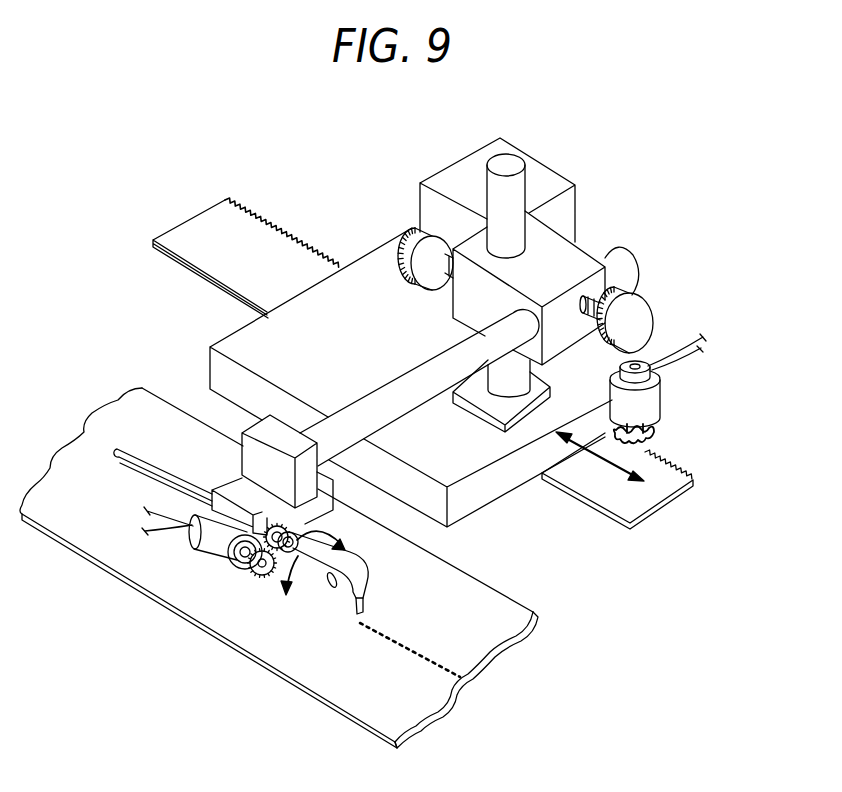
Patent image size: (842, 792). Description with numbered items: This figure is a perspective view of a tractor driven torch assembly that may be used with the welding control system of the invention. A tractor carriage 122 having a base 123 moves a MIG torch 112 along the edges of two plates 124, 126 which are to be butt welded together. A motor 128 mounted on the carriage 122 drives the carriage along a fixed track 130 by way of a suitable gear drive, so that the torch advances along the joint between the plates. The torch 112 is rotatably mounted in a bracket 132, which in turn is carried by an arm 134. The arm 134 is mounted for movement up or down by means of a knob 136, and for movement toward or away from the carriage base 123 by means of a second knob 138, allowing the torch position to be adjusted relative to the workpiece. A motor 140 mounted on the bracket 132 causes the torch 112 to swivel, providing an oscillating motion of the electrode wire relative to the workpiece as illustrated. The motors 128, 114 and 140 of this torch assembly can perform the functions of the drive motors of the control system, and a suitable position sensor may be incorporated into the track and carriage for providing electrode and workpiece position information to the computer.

The torch 112 is at (357, 577).
The motor 114 is at (317, 573).
The tractor carriage 122 is at (587, 238).
The carriage base 123 is at (470, 451).
The plate 124 is at (473, 626).
The plate 126 is at (385, 692).
The motor 128 is at (650, 403).
The fixed track 130 is at (608, 490).
The bracket 132 is at (297, 510).
The arm 134 is at (412, 382).
The knob 136 is at (410, 245).
The knob 138 is at (635, 315).
The motor 140 is at (217, 543).